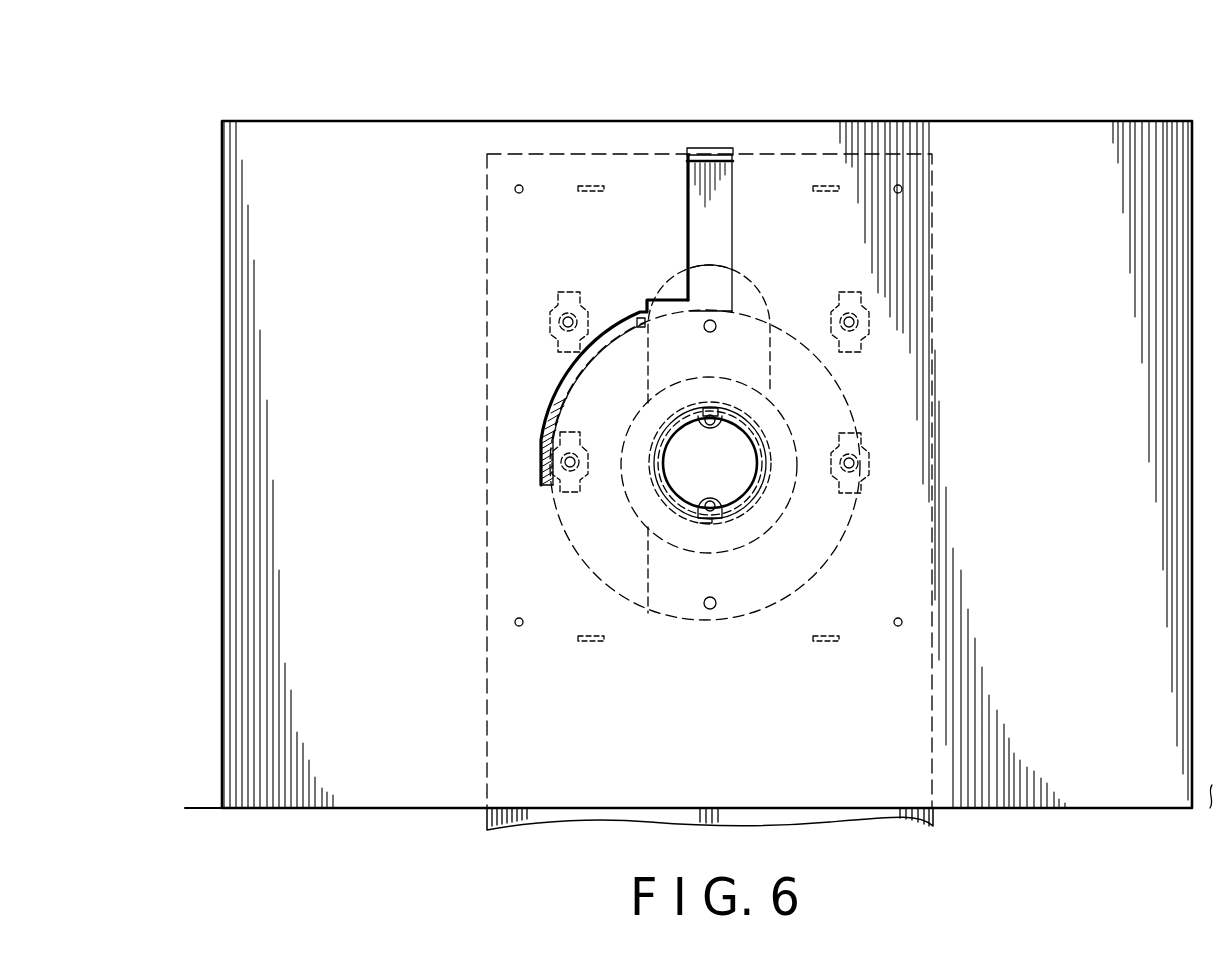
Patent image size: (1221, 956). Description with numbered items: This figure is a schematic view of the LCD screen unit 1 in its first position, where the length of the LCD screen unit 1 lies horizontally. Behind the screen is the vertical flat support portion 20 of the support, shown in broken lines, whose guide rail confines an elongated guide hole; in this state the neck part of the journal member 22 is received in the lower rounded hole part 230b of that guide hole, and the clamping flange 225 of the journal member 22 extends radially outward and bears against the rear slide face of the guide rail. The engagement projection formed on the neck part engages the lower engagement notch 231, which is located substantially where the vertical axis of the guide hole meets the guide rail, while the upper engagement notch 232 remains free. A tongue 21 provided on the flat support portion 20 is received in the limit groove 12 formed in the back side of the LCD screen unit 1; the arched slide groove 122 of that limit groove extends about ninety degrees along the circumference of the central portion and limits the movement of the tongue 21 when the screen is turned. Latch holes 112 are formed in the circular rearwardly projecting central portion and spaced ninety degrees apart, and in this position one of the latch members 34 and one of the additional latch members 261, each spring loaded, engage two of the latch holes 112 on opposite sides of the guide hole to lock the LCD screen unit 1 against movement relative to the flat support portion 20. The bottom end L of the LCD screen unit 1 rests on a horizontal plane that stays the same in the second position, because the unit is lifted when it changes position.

The LCD screen unit 1 is at (855, 106).
The limit groove 12 is at (700, 196).
The tongue 21 is at (717, 155).
The vertical flat support portion 20 is at (925, 200).
The journal member 22 is at (648, 613).
The arched slide groove 122 is at (604, 340).
The upper engagement notch 232 is at (568, 372).
The clamping flange 225 is at (790, 438).
The latch holes 112 is at (691, 403).
The additional latch members 261 is at (566, 461).
The latch members 34 is at (862, 473).
The lower rounded hole part 230b is at (763, 497).
The lower engagement notch 231 is at (750, 535).
The bottom end L is at (1220, 775).